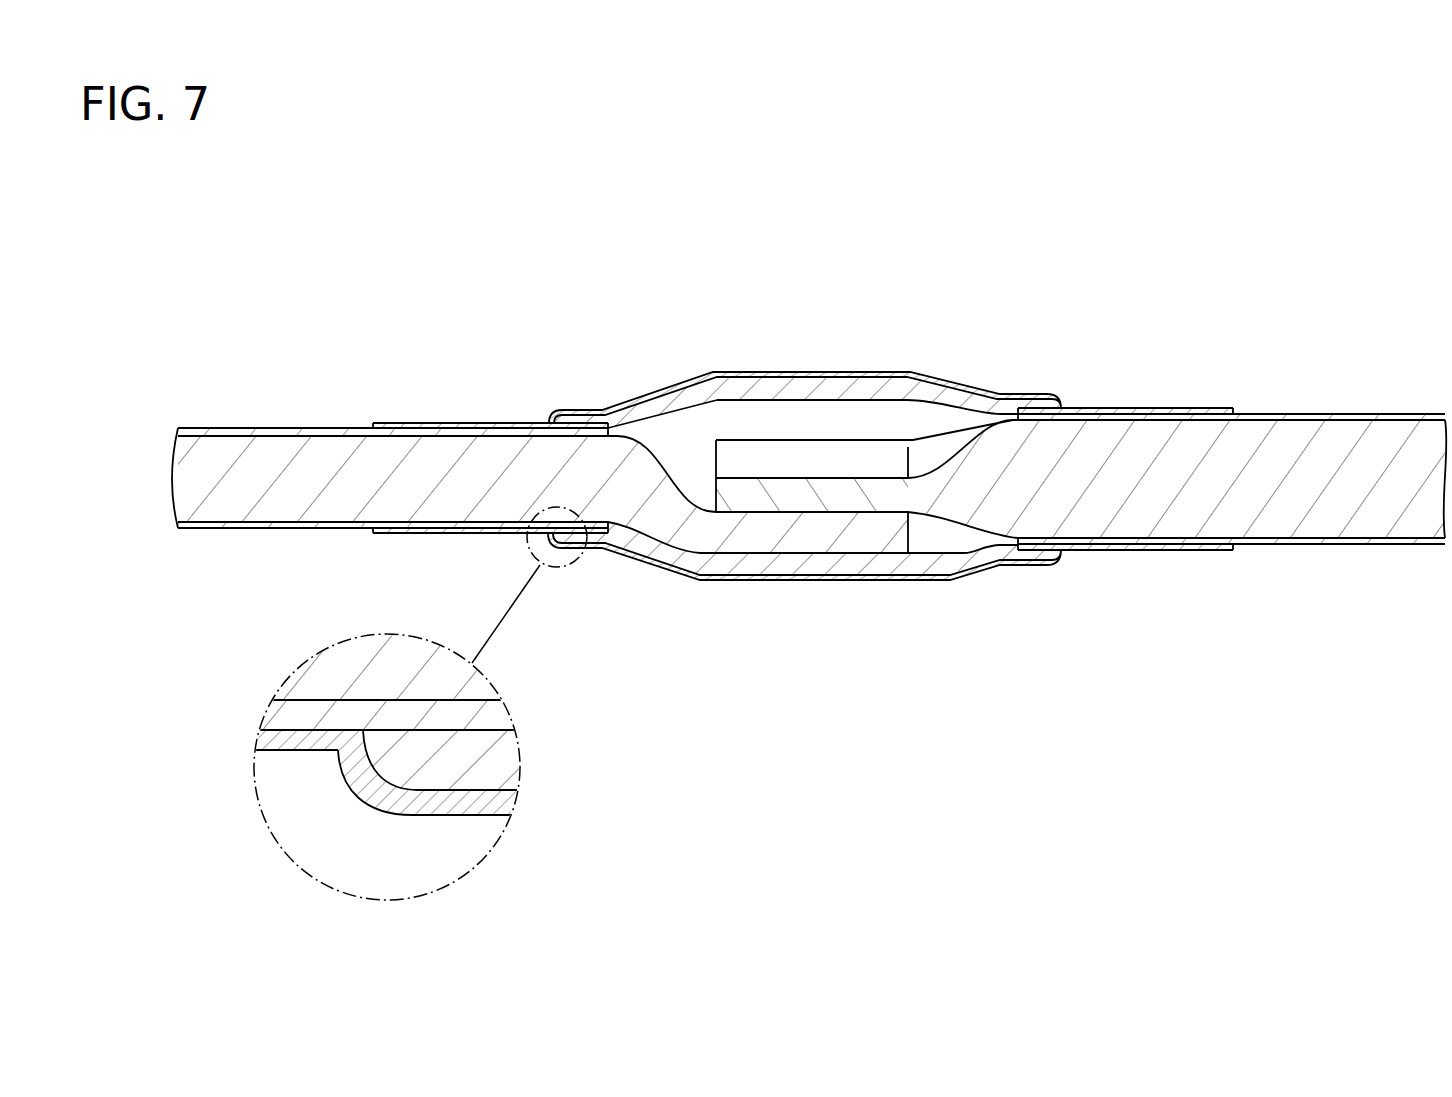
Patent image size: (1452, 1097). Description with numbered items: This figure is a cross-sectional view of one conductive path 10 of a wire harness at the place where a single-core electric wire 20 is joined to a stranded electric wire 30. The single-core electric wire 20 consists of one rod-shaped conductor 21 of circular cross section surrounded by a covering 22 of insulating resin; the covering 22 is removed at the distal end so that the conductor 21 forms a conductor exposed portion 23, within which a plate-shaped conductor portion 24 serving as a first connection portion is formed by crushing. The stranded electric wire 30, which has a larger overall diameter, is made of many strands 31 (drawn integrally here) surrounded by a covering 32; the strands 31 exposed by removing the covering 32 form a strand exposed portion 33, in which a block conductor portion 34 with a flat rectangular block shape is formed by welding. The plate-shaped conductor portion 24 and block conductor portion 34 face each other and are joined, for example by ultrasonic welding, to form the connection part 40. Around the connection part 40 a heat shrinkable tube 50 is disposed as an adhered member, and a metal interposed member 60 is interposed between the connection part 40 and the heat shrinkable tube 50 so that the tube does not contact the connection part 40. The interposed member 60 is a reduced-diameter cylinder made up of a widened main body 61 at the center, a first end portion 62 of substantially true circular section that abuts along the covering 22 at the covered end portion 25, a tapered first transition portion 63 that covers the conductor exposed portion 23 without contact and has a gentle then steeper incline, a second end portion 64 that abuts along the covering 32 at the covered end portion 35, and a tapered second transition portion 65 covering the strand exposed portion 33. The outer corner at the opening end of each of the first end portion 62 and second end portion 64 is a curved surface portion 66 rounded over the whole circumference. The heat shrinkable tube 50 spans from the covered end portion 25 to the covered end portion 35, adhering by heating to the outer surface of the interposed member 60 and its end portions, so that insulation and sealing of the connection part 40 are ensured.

The conductive path 10 is at (838, 223).
The single-core electric wire 20 is at (312, 346).
The conductor 21 is at (298, 452).
The covering 22 is at (250, 425).
The conductor exposed portion 23 is at (680, 530).
The plate-shaped conductor portion 24 is at (835, 540).
The covered end portion 25 is at (497, 718).
The stranded electric wire 30 is at (1380, 338).
The strands 31 is at (1362, 436).
The covering 32 is at (1310, 410).
The strand exposed portion 33 is at (940, 512).
The block conductor portion 34 is at (790, 500).
The covered end portion 35 is at (1033, 547).
The connection part 40 is at (832, 575).
The heat shrinkable tube 50 is at (693, 616).
The interposed member 60 is at (729, 534).
The main body 61 is at (890, 392).
The first end portion 62 is at (583, 418).
The first transition portion 63 is at (631, 410).
The second end portion 64 is at (1046, 405).
The second transition portion 65 is at (976, 398).
The curved surface portion 66 is at (1058, 562).